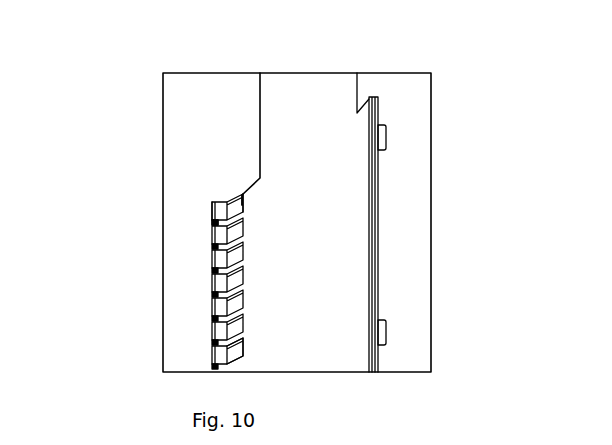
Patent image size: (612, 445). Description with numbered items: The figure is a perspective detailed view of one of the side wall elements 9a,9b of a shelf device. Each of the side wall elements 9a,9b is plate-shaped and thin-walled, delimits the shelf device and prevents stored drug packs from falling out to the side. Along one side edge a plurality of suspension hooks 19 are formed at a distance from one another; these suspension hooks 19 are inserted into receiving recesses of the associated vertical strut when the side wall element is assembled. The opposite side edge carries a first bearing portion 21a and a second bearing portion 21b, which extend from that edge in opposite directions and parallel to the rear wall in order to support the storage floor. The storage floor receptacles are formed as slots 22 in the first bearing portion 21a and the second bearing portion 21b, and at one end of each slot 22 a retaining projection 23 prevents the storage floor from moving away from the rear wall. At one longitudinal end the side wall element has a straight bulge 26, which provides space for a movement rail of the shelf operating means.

The side wall elements 9a,9b is at (303, 90).
The suspension hooks 19 is at (386, 136).
The first bearing portion 21a is at (213, 352).
The second bearing portion 21b is at (243, 352).
The slots 22 is at (208, 222).
The retaining projection 23 is at (218, 226).
The bulge 26 is at (242, 170).